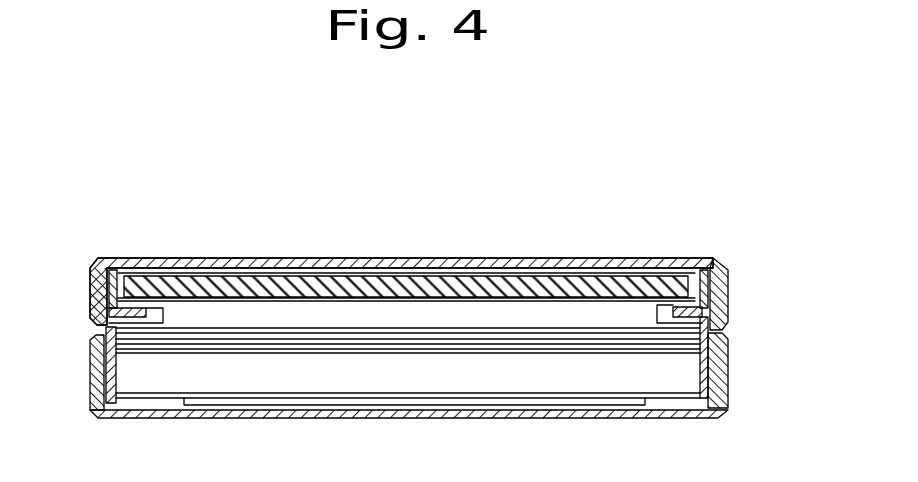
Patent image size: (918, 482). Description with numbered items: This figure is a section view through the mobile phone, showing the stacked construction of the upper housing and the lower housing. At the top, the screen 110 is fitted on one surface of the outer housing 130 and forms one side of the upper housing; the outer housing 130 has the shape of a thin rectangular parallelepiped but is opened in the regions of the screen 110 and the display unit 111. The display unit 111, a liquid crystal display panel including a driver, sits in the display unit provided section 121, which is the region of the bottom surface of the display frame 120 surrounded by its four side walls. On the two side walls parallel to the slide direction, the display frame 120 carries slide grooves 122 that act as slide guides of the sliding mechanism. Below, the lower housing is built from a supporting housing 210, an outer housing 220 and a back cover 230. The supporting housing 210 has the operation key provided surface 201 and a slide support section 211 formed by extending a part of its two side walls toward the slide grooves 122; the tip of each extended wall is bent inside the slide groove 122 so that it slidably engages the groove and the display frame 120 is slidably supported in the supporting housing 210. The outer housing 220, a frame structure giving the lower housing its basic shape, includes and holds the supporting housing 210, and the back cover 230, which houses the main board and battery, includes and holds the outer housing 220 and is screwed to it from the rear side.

The screen 110 is at (630, 258).
The display unit 111 is at (332, 275).
The display frame 120 is at (140, 275).
The display unit provided section 121 is at (435, 282).
The slide groove 122 is at (677, 320).
The outer housing 130 is at (727, 298).
The operation key provided surface 201 is at (338, 337).
The supporting housing 210 is at (92, 330).
The slide support section 211 is at (725, 333).
The outer housing 220 is at (727, 342).
The back cover 230 is at (727, 397).